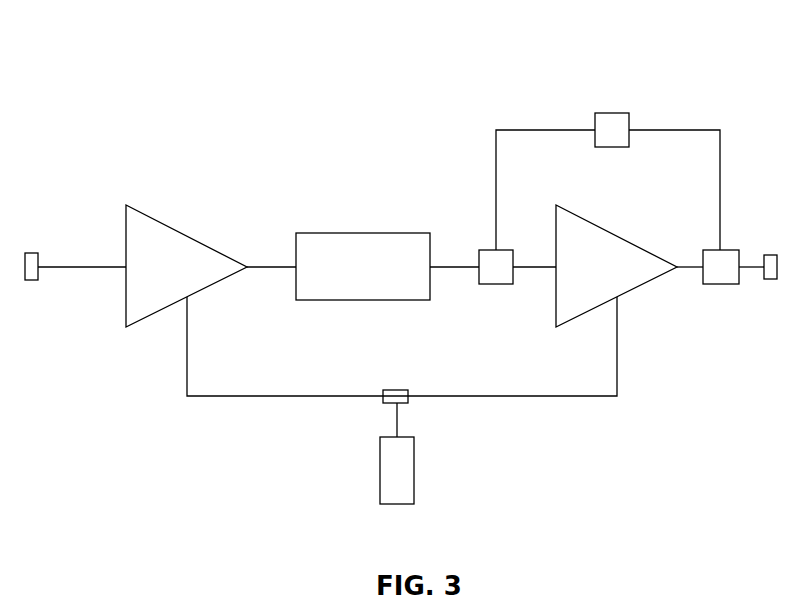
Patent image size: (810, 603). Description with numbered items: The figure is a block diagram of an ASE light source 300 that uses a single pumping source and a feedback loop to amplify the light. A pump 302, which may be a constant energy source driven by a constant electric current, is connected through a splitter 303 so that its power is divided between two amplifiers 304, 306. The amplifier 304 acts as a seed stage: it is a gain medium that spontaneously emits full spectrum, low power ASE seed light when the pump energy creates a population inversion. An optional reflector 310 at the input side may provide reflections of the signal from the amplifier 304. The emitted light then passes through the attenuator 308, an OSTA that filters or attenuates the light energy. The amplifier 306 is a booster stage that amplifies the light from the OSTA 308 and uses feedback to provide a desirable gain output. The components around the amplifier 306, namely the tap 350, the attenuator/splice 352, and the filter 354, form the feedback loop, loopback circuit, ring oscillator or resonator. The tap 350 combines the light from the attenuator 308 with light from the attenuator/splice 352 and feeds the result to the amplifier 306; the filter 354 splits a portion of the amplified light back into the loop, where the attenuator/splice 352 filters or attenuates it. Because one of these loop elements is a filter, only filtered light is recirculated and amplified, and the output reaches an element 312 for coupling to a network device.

The ASE light source 300 is at (370, 50).
The pump 302 is at (414, 457).
The splitter 303 is at (398, 390).
The amplifier 304 is at (178, 231).
The amplifier 306 is at (608, 232).
The attenuator 308 is at (358, 233).
The reflector 310 is at (31, 253).
The element for coupling to a network device 312 is at (770, 255).
The tap 350 is at (505, 250).
The attenuator/splice 352 is at (611, 113).
The filter 354 is at (721, 284).